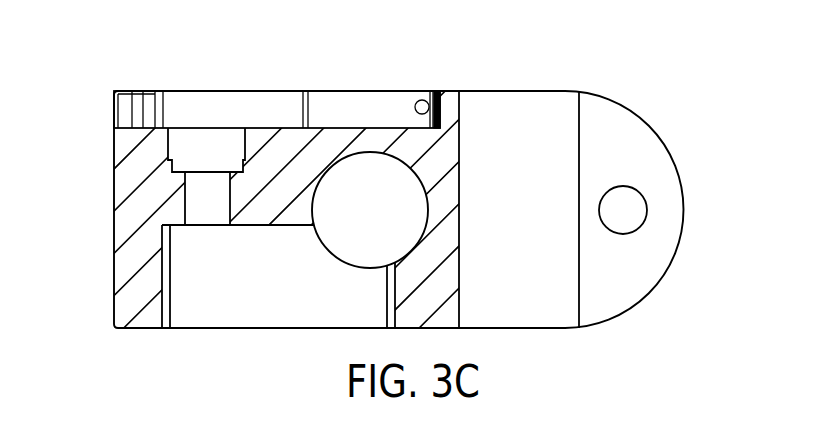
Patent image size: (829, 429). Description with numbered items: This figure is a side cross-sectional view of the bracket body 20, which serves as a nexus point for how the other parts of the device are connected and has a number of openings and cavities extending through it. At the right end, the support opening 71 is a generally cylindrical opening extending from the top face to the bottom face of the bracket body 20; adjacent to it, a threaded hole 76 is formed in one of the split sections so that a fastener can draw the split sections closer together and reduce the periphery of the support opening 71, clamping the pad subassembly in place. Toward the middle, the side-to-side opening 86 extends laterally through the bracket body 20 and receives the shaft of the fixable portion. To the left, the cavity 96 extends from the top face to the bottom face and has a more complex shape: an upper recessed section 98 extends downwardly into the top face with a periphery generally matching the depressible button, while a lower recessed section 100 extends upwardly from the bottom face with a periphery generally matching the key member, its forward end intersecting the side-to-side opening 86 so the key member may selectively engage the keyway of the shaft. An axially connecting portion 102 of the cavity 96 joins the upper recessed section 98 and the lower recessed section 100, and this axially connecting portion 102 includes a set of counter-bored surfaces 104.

The bracket body 20 is at (670, 70).
The support opening 71 is at (578, 112).
The threaded hole 76 is at (608, 226).
The side-to-side opening 86 is at (398, 155).
The cavity 96 is at (210, 303).
The upper recessed section 98 is at (278, 100).
The lower recessed section 100 is at (282, 297).
The axially connecting portion 102 is at (195, 202).
The counter-bored surfaces 104 is at (181, 166).